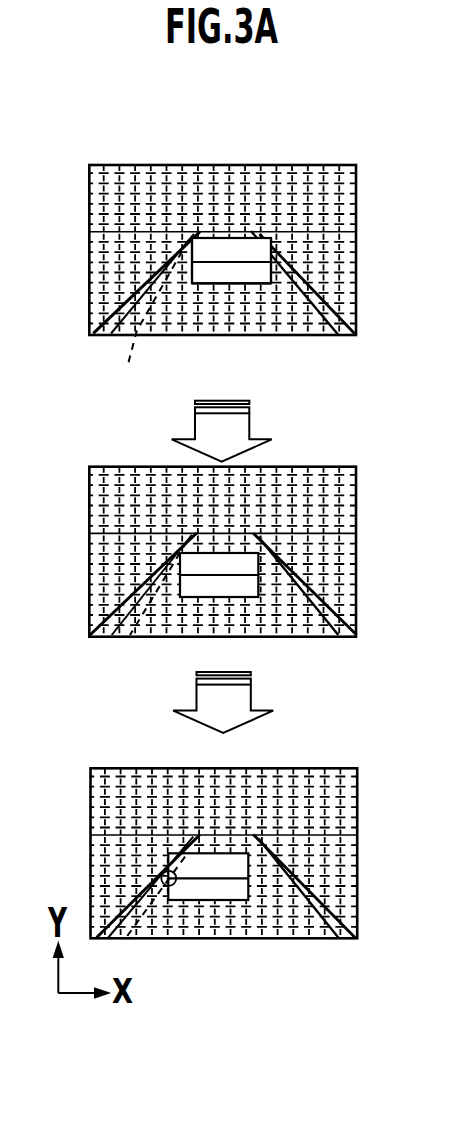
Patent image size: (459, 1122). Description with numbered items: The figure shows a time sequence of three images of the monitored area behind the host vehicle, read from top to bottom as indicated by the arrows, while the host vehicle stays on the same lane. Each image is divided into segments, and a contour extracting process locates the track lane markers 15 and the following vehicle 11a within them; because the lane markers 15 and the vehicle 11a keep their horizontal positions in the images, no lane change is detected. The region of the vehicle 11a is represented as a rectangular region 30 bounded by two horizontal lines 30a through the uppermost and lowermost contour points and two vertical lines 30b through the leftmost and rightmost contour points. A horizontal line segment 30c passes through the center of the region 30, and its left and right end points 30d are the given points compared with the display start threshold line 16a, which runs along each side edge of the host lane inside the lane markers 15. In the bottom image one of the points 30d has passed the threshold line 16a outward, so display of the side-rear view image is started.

The vehicle 11a is at (238, 236).
The track lane markers 15 is at (102, 313).
The display start threshold line 16a is at (145, 320).
The rectangular region 30 is at (295, 253).
The horizontal lines 30a is at (253, 284).
The vertical lines 30b is at (292, 283).
The horizontal line segment 30c is at (241, 264).
The left and right end points 30d is at (192, 262).